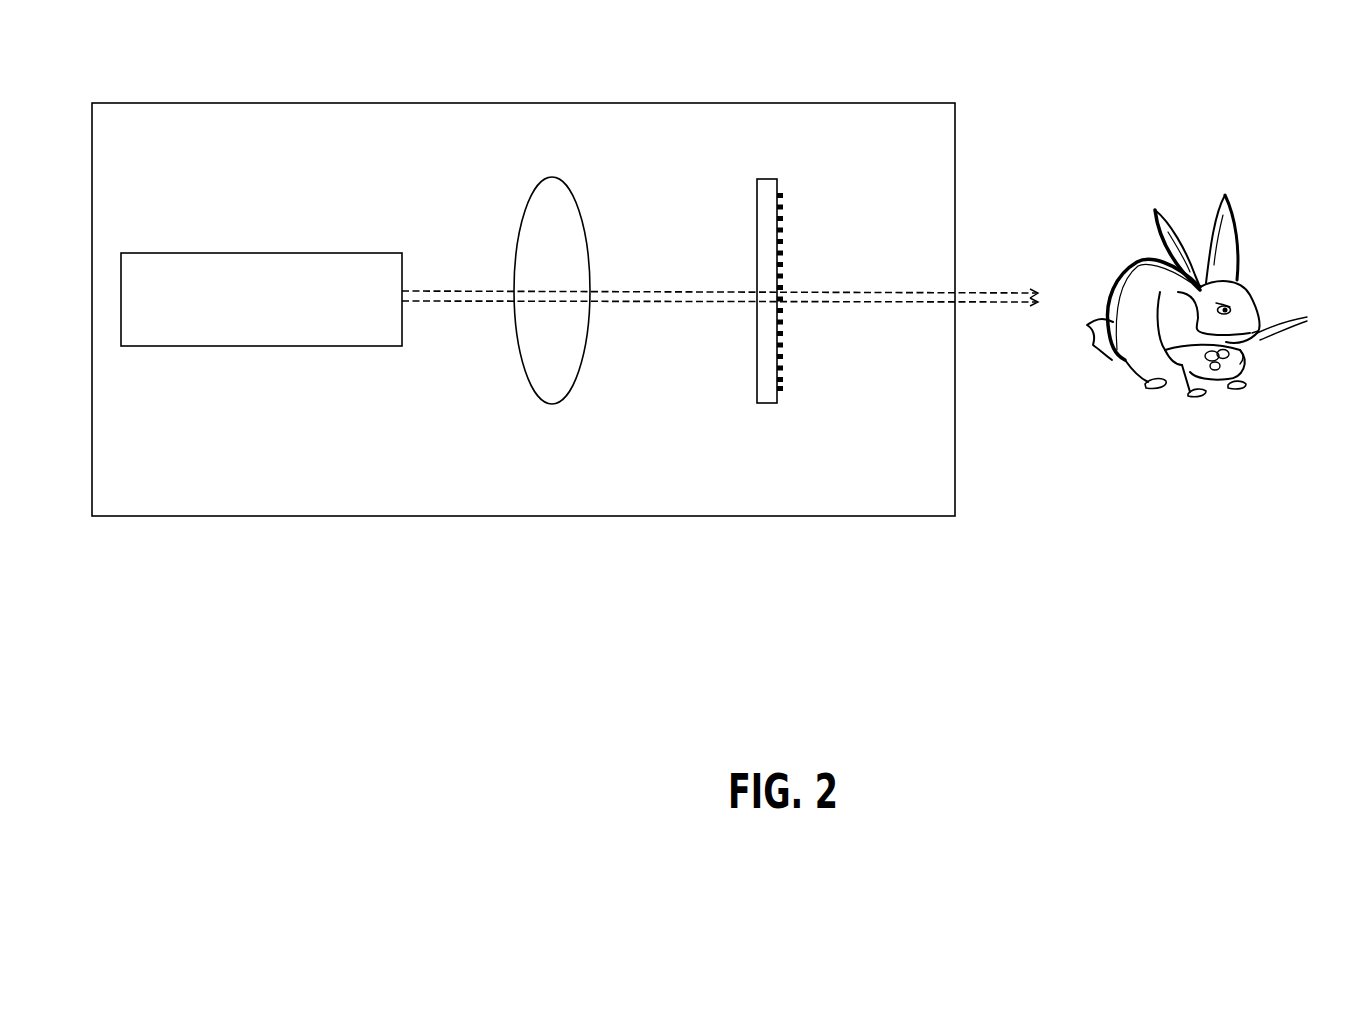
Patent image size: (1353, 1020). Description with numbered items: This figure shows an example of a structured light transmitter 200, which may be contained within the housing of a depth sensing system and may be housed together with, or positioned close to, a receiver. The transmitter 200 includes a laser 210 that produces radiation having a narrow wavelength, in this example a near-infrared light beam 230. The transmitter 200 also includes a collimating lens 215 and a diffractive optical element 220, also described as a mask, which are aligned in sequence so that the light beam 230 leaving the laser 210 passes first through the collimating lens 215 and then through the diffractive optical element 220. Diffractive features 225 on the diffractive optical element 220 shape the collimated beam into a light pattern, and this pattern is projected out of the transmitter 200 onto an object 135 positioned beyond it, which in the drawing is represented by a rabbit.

The structured light projector / illumination system 200 is at (842, 103).
The laser 210 is at (291, 253).
The lens 215 is at (580, 225).
The diffractive optical element 220 is at (767, 183).
The diffractive surface pattern 225 is at (783, 255).
The structured light beam 230 is at (851, 291).
The object 135 is at (1246, 288).